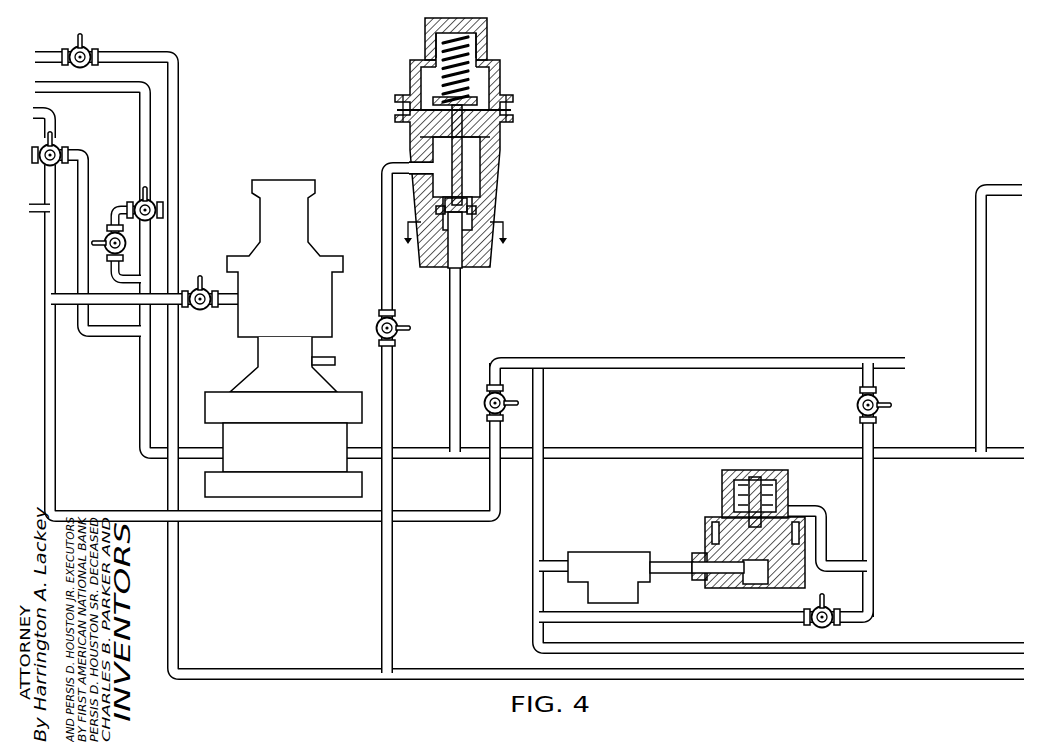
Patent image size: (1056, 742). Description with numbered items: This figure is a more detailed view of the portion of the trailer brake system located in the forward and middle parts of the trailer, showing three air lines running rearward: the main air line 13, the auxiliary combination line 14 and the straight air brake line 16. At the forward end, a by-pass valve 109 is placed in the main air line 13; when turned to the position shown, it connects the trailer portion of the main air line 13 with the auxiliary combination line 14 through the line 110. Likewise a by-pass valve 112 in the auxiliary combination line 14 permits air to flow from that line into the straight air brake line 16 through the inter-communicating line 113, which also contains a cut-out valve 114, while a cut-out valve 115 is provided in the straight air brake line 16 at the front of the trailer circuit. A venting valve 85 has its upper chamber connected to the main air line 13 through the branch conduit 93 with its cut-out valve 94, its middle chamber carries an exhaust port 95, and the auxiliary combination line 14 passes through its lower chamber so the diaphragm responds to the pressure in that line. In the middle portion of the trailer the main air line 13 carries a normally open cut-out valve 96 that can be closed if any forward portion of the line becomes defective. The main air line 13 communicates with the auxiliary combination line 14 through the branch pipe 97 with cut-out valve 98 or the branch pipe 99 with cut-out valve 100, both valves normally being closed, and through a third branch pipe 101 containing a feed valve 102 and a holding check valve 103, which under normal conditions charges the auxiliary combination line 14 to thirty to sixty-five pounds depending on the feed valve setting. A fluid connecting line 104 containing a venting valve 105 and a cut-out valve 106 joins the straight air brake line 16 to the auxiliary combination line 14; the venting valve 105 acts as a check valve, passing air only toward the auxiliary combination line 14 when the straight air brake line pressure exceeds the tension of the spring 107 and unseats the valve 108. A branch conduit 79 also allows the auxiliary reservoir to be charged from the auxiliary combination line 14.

The main air line 13 is at (58, 398).
The auxiliary combination line 14 is at (140, 127).
The straight air brake line 16 is at (180, 101).
The branch conduit 79 is at (988, 370).
The venting valve 85 is at (298, 291).
The branch conduit 93 is at (68, 308).
The cut-out valve 94 is at (206, 284).
The exhaust port 95 is at (334, 358).
The cut-out valve 96 is at (487, 395).
The branch pipe 97 is at (718, 358).
The cut-out valve 98 is at (878, 398).
The branch pipe 99 is at (700, 611).
The cut-out valve 100 is at (832, 625).
The third branch pipe 101 is at (673, 561).
The feed valve 102 is at (627, 581).
The holding check valve 103 is at (790, 497).
The fluid connecting line 104 is at (462, 303).
The venting valve 105 is at (493, 210).
The cut-out valve 106 is at (393, 322).
The spring 107 is at (470, 58).
The valve 108 is at (470, 200).
The by-pass valve 109 is at (57, 145).
The line 110 is at (88, 263).
The by-pass valve 112 is at (157, 197).
The inter-communicating line 113 is at (110, 214).
The cut-out valve 114 is at (127, 243).
The cut-out valve 115 is at (74, 45).